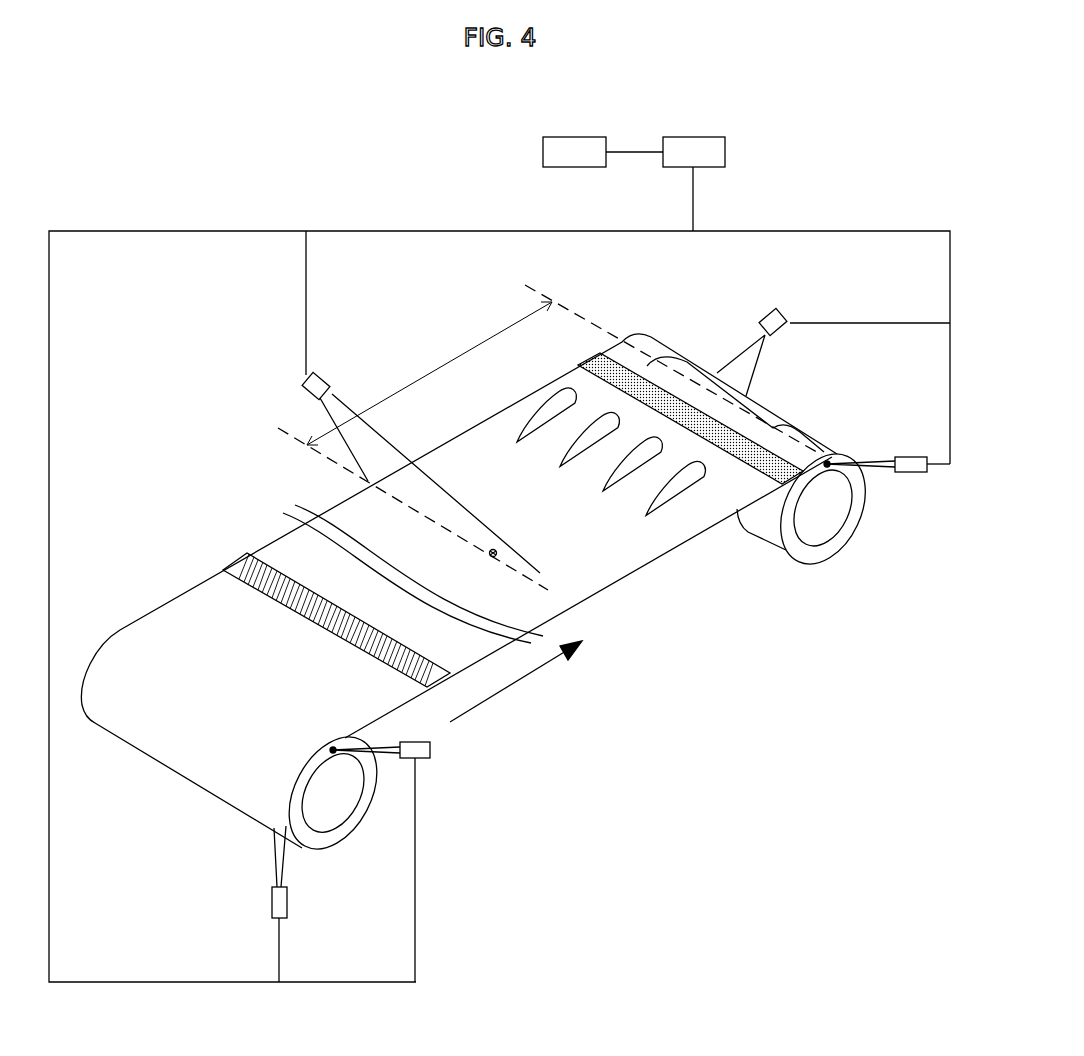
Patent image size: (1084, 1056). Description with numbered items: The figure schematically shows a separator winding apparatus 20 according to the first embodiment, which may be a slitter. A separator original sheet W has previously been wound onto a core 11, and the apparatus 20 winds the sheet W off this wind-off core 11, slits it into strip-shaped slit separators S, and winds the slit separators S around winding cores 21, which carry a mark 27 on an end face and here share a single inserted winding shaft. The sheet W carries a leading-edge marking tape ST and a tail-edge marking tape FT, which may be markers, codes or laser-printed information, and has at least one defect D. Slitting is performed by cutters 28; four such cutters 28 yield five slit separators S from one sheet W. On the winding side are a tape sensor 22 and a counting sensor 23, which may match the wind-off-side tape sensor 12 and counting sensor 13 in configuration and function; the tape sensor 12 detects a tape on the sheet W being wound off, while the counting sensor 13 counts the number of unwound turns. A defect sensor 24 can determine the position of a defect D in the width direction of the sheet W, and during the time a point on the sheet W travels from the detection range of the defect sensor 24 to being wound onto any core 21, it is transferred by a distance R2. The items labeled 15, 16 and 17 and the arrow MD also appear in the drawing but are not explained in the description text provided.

The separator winding apparatus 20 is at (156, 189).
The display unit 16 is at (579, 137).
The control unit 15 is at (694, 137).
The defect sensor 24 is at (299, 380).
The cutter 28 is at (558, 407).
The tape sensor 22 is at (789, 313).
The counting sensor 23 is at (915, 457).
The mark 27 is at (838, 478).
The core 21 is at (823, 550).
The counting sensor 13 is at (420, 742).
The rotation shaft 17 is at (340, 758).
The core 11 is at (345, 830).
The tape sensor 12 is at (276, 905).
The separator original sheet W is at (600, 557).
The slit separator S is at (743, 402).
The leading-edge marking tape ST is at (232, 547).
The tail-edge marking tape FT is at (585, 340).
The defect D is at (481, 565).
The distance R2 is at (417, 378).
The machine direction MD is at (516, 693).